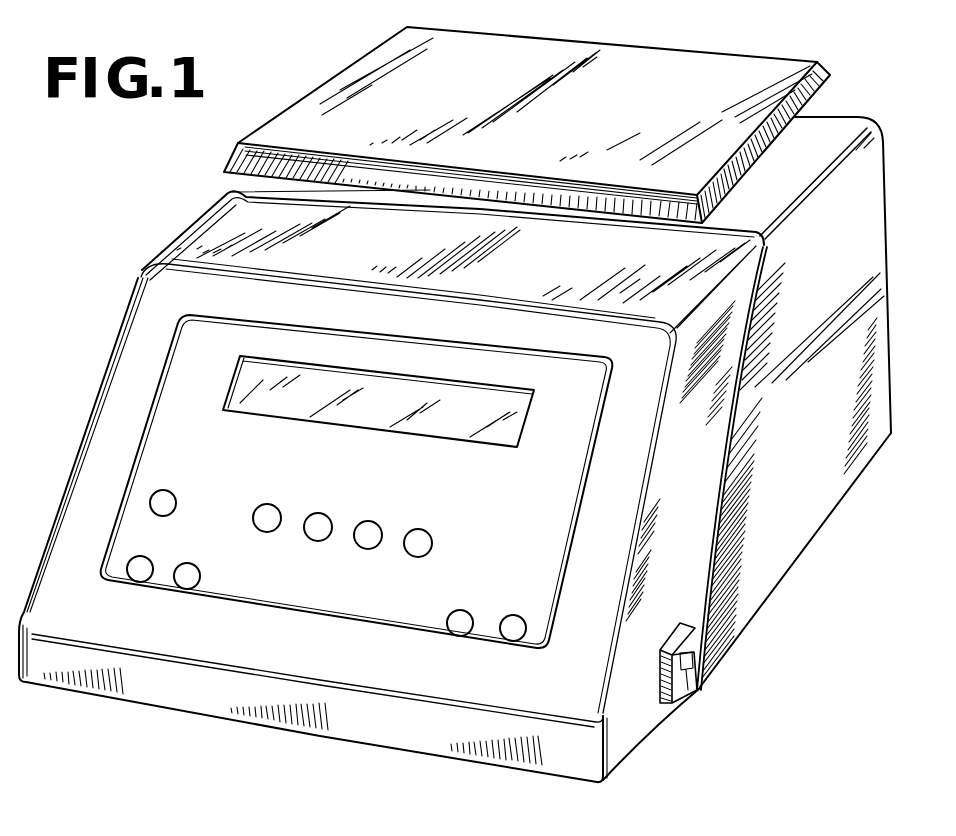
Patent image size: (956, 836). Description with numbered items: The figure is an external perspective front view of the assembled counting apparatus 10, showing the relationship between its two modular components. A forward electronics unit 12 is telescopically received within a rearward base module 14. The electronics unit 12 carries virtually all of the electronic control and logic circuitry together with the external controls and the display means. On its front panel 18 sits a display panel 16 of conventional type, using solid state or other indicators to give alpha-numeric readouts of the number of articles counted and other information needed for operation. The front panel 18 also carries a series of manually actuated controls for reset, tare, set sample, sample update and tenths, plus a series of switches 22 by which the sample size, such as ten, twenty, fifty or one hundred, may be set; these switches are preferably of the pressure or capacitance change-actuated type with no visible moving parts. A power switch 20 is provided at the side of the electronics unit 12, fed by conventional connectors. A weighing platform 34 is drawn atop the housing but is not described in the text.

The apparatus 10 is at (110, 266).
The electronics unit 12 is at (662, 588).
The base module 14 is at (767, 522).
The display panel 16 is at (267, 387).
The front panel 18 is at (192, 436).
The power switch 20 is at (683, 698).
The switches 22 is at (419, 529).
The weighing platform 34 is at (727, 91).